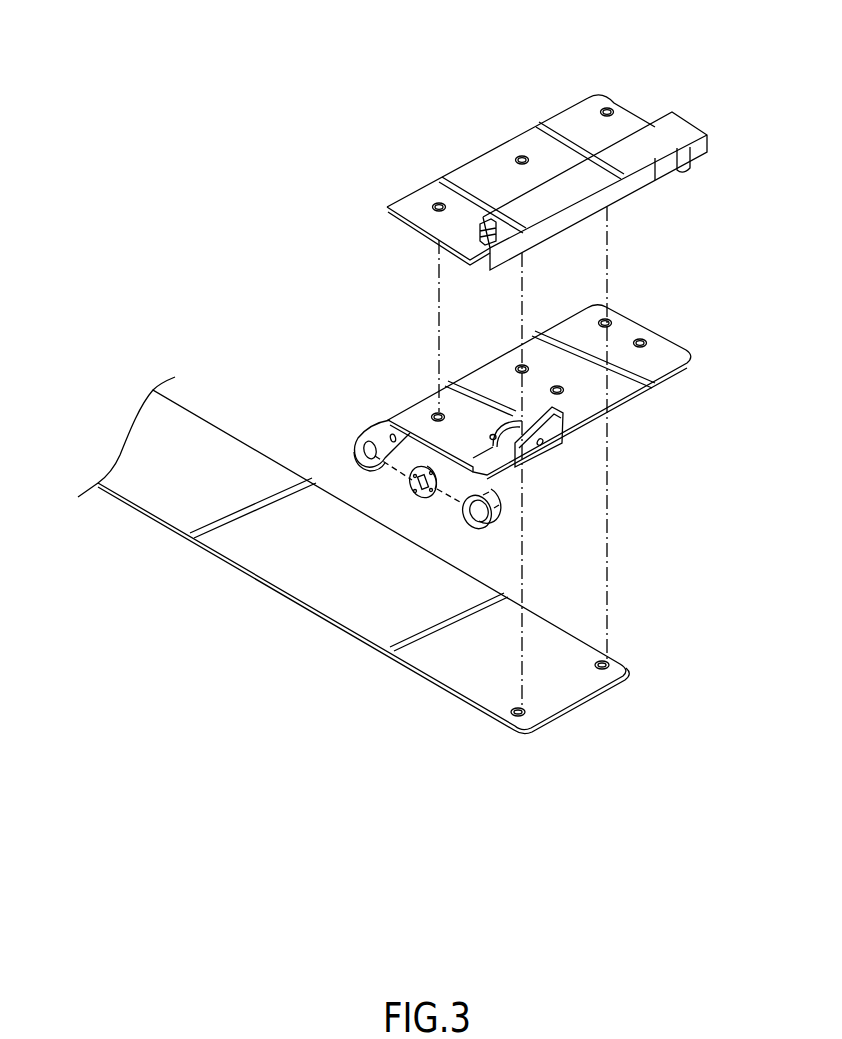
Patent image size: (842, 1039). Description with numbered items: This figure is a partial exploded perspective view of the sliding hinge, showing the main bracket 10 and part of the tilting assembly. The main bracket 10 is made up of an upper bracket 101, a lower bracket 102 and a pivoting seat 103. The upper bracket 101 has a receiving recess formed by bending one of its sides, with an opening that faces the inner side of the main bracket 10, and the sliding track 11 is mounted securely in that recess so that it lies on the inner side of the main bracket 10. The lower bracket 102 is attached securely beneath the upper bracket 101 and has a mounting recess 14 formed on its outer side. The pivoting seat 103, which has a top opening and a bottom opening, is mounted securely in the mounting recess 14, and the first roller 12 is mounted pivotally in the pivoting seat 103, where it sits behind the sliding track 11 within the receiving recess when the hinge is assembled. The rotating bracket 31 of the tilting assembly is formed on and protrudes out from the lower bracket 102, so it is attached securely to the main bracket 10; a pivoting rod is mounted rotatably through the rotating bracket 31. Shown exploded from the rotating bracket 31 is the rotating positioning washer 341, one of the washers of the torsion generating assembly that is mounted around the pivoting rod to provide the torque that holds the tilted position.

The main bracket 10 is at (585, 286).
The upper bracket 101 is at (627, 112).
The lower bracket 102 is at (680, 357).
The sliding track 11 is at (483, 225).
The mounting recess 14 is at (575, 427).
The first roller 12 is at (551, 465).
The pivoting seat 103 is at (553, 443).
The rotating bracket 31 is at (358, 443).
The rotating positioning washer 341 is at (462, 517).